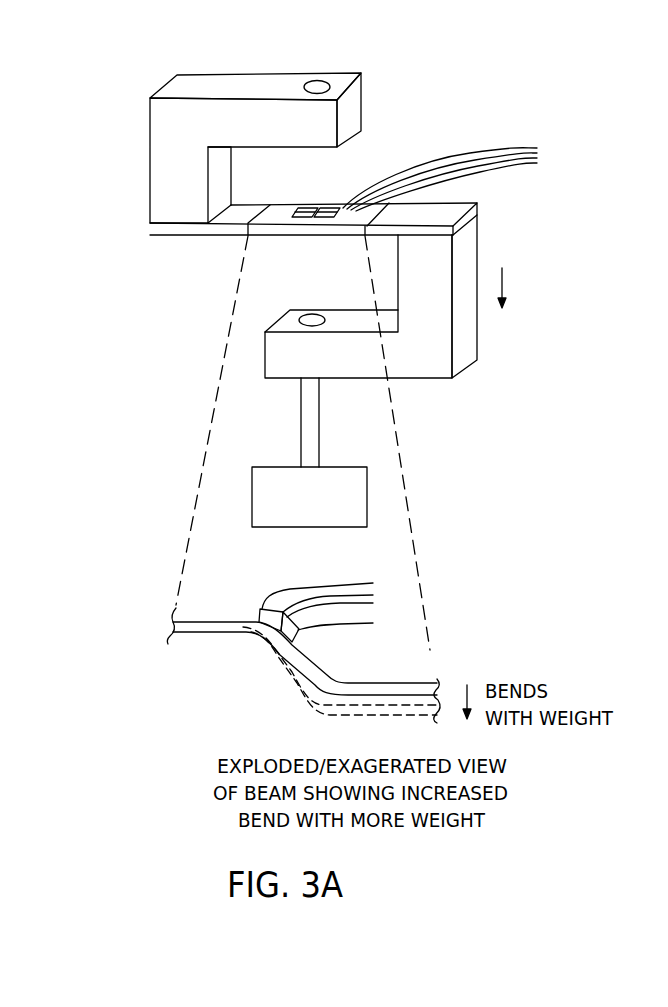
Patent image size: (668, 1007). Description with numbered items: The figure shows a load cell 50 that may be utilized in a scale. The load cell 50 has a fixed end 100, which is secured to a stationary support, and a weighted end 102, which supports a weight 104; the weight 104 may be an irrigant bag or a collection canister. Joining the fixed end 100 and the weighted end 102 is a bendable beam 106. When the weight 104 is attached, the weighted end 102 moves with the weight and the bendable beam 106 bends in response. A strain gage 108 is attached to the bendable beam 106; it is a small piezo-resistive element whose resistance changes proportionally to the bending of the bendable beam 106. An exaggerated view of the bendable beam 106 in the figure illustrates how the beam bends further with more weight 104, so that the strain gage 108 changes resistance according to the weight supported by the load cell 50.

The load cell 50 is at (120, 85).
The fixed end 100 is at (362, 74).
The weighted end 102 is at (447, 381).
The weight 104 is at (282, 467).
The bendable beam 106 is at (467, 203).
The strain gage 108 is at (340, 198).